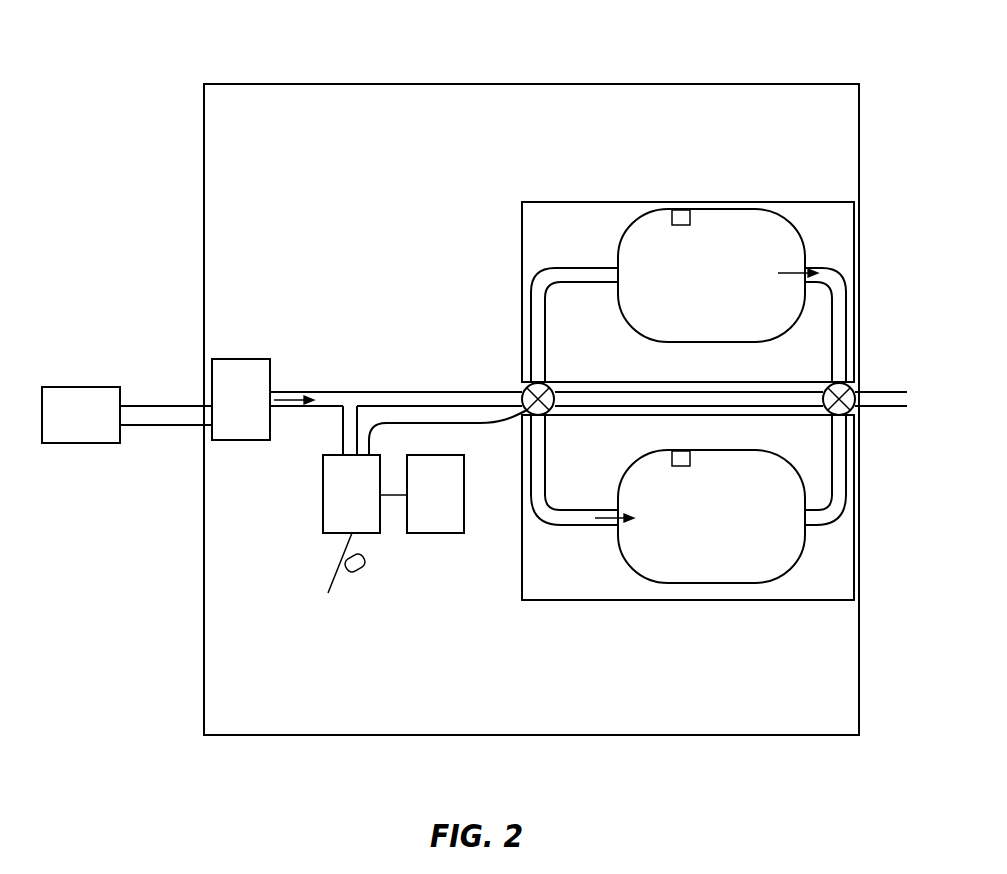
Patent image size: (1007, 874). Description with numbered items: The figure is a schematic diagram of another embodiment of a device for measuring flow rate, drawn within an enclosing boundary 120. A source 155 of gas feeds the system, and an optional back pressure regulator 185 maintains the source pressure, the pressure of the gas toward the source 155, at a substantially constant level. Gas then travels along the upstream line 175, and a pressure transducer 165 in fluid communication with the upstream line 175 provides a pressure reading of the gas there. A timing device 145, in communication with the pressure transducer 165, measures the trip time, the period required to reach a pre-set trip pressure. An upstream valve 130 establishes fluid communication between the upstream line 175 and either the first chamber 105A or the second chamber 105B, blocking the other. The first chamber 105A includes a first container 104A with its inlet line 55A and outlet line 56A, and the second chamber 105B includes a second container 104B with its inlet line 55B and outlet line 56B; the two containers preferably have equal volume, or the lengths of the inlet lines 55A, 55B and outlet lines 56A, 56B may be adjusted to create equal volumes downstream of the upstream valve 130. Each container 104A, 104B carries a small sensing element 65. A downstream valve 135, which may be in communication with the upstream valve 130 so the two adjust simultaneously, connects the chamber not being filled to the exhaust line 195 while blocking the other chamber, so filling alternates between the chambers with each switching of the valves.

The processing system enclosure 120 is at (610, 84).
The first chamber 105A is at (610, 202).
The second chamber 105B is at (680, 600).
The first container 104A is at (718, 275).
The second container 104B is at (700, 516).
The sensor 65 is at (690, 218).
The inlet line 55A is at (556, 268).
The inlet line 55B is at (570, 525).
The outlet line 56A is at (846, 327).
The outlet line 56B is at (838, 518).
The upstream valve 130 is at (554, 399).
The downstream valve 135 is at (823, 399).
The exhaust line 195 is at (874, 391).
The back pressure regulator 185 is at (517, 399).
The source 155 is at (127, 415).
The upstream line 175 is at (349, 400).
The pressure transducer 165 is at (425, 501).
The timing device 145 is at (422, 494).